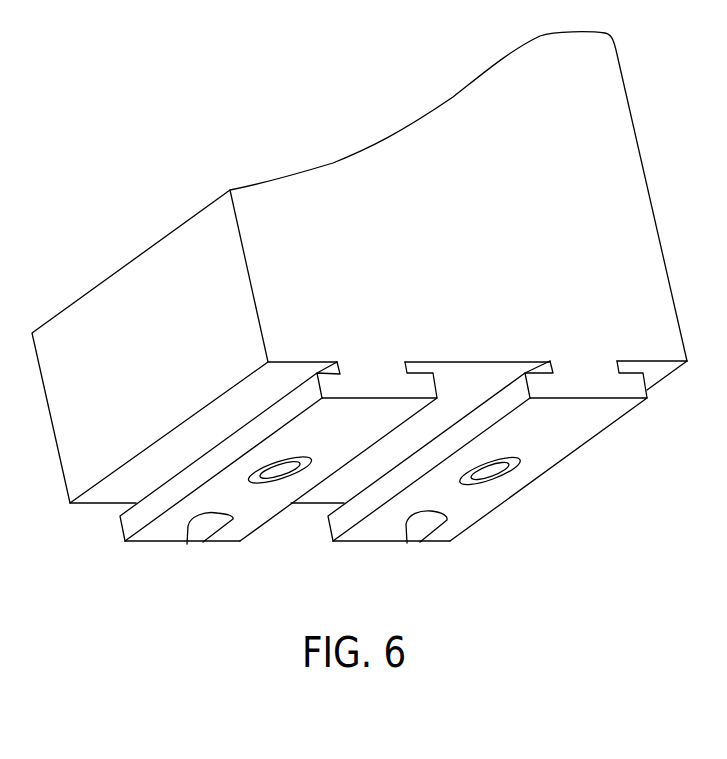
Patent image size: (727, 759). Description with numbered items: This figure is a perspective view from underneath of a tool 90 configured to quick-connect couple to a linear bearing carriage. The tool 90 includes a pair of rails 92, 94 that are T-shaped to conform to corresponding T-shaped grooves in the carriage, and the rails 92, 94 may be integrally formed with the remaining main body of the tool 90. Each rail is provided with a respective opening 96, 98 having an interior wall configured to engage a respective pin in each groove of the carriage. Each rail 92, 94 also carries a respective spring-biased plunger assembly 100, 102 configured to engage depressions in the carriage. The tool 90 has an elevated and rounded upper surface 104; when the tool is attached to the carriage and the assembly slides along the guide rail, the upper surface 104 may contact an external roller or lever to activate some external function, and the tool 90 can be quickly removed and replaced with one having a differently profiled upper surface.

The tool 90 is at (359, 313).
The rail 92 is at (487, 477).
The rail 94 is at (252, 471).
The opening 96 is at (416, 524).
The opening 98 is at (197, 528).
The spring-biased plunger assembly 100 is at (491, 474).
The spring-biased plunger assembly 102 is at (275, 474).
The upper surface 104 is at (433, 111).